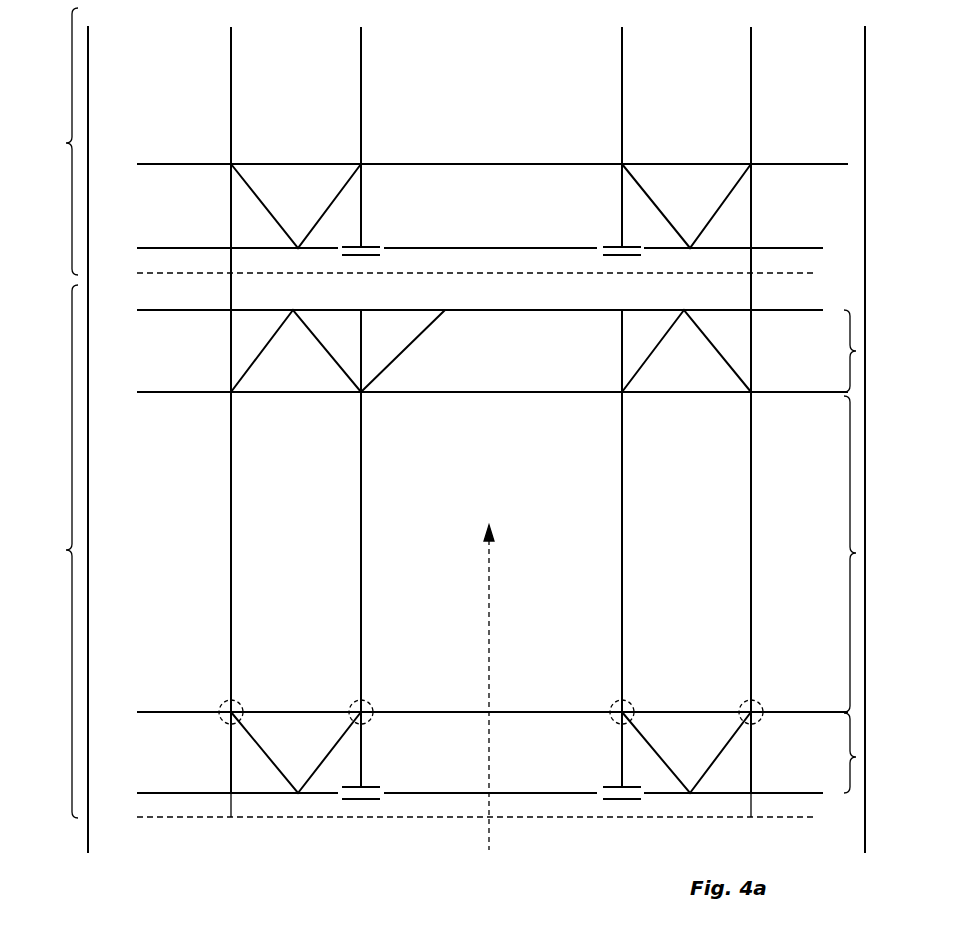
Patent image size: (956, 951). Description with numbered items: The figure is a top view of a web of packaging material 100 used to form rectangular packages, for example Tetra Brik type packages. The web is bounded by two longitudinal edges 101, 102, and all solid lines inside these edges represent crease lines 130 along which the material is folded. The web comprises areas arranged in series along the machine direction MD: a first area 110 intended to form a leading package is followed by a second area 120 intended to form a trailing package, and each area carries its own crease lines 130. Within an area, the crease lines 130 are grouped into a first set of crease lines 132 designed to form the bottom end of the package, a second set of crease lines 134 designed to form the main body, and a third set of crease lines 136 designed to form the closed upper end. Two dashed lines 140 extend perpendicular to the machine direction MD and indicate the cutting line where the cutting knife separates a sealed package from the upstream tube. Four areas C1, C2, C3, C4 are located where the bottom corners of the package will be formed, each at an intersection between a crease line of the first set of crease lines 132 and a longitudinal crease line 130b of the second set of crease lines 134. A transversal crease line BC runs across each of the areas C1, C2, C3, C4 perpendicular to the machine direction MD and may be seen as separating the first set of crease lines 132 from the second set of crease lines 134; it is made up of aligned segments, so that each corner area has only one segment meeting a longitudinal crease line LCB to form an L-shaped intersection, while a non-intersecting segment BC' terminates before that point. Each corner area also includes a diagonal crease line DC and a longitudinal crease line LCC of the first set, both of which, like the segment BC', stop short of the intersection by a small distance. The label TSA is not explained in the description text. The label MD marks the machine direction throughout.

The packaging material 100 is at (545, 95).
The longitudinal edge 101 is at (866, 125).
The longitudinal edge 102 is at (89, 652).
The first area 110 is at (49, 551).
The second area 120 is at (50, 141).
The crease lines 130 is at (263, 200).
The longitudinal crease line 130b is at (362, 472).
The first set of crease lines 132 is at (879, 753).
The second set of crease lines 134 is at (879, 554).
The third set of crease lines 136 is at (877, 351).
The dashed lines 140 is at (790, 272).
The longitudinal crease line LCB is at (232, 600).
The longitudinal crease line LCC is at (230, 762).
The transversal crease line BC is at (604, 684).
The segment of transversal crease line BC' is at (249, 690).
The diagonal crease line DC is at (262, 752).
The area C1 is at (226, 702).
The area C2 is at (370, 722).
The area C3 is at (617, 702).
The area C4 is at (760, 722).
The touch sensing area TSA is at (293, 808).
The machine direction MD is at (491, 711).